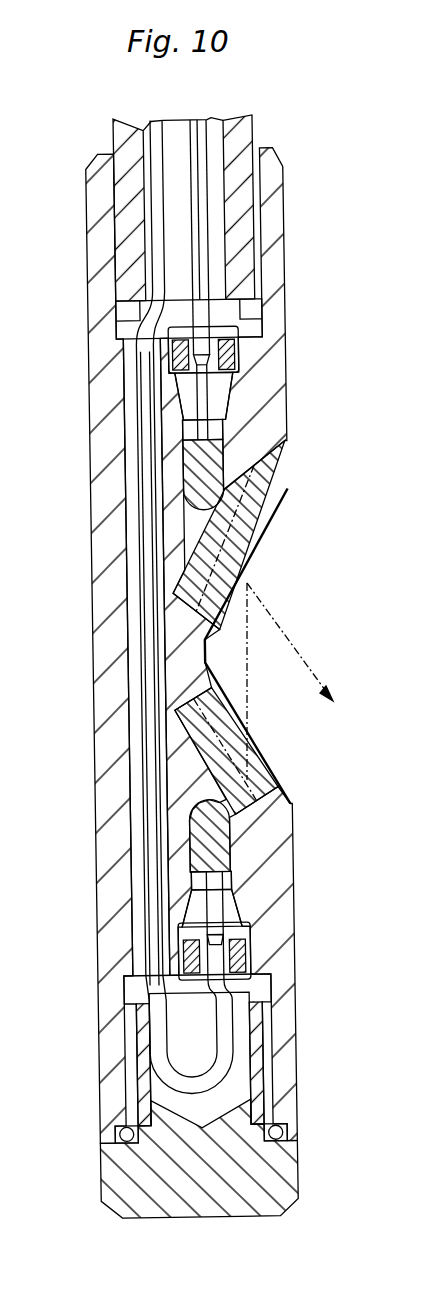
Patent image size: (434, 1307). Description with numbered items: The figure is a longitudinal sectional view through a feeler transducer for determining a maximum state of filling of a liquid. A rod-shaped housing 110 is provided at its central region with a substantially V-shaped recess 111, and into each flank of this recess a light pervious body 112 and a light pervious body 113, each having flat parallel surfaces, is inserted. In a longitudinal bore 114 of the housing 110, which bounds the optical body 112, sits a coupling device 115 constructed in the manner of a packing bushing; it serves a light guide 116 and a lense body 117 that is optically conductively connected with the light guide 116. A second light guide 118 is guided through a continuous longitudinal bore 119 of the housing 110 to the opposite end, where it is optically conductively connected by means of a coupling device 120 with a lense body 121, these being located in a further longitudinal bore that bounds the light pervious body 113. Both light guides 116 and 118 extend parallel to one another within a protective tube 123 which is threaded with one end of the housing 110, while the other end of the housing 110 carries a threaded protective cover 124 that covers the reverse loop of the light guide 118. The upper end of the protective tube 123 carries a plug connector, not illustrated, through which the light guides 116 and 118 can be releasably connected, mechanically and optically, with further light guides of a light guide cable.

The housing 110 is at (270, 320).
The V-shaped recess 111 is at (225, 660).
The light pervious body 112 is at (247, 537).
The light pervious body 113 is at (253, 780).
The longitudinal bore 114 is at (220, 428).
The coupling device 115 is at (215, 397).
The light guide 116 is at (268, 142).
The lense body 117 is at (217, 463).
The second light guide 118 is at (153, 143).
The continuous longitudinal bore 119 is at (125, 490).
The coupling device 120 is at (227, 913).
The lense body 121 is at (220, 848).
The protective tube 123 is at (259, 121).
The threaded protective cover 124 is at (273, 1163).